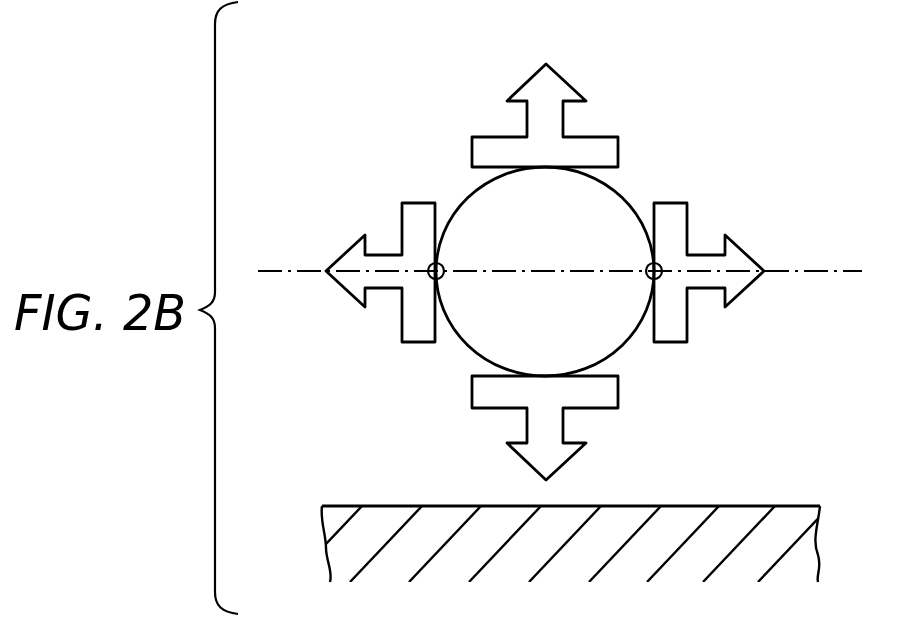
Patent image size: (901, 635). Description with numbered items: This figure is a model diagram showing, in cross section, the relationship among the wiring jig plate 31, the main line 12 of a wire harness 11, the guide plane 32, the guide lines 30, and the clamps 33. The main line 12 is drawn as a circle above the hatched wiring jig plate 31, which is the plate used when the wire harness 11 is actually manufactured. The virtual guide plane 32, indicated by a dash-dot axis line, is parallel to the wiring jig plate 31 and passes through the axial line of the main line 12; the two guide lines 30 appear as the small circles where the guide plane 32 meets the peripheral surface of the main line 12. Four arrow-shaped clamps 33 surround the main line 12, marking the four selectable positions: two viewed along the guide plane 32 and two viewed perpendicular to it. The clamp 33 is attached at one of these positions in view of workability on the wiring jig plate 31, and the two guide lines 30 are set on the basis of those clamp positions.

The wire harness 11 is at (573, 245).
The main line 12 is at (622, 194).
The guide lines 30 is at (434, 278).
The wiring jig plate 31 is at (758, 505).
The guide plane 32 is at (284, 268).
The clamp 33 is at (556, 92).